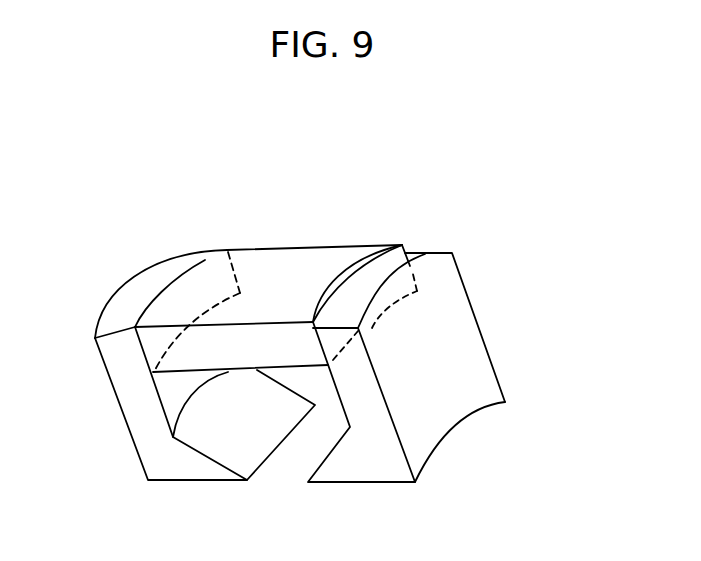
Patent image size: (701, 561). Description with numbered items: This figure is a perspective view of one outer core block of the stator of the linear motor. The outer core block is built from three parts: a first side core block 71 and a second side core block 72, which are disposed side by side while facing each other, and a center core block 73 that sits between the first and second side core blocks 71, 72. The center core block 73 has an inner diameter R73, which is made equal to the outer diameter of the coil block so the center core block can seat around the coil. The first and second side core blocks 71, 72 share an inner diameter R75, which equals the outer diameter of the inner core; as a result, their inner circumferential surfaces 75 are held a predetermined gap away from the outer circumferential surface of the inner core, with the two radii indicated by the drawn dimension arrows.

The first side core block 71 is at (152, 288).
The second side core block 72 is at (358, 293).
The center core block 73 is at (278, 273).
The inner circumferential surface 75 is at (492, 407).
The inner diameter of the center core block R73 is at (407, 427).
The inner diameter of the side core blocks R75 is at (452, 432).